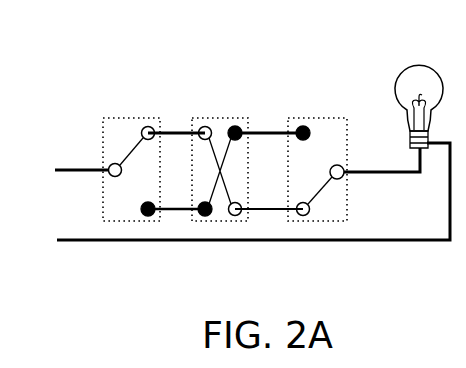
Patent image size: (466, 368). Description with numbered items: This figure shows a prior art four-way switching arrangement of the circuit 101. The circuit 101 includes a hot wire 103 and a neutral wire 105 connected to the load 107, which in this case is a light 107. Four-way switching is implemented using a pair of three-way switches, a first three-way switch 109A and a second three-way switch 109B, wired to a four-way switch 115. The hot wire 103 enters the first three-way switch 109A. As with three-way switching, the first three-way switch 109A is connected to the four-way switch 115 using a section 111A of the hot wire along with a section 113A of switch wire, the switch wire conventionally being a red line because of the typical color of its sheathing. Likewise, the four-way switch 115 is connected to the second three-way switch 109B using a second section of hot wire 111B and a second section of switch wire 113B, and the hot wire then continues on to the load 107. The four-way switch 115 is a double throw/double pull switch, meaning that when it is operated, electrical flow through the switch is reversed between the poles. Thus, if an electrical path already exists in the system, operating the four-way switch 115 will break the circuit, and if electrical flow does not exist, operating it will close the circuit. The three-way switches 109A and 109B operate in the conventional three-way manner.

The circuit 101 is at (333, 34).
The hot wire 103 is at (62, 168).
The neutral wire 105 is at (393, 242).
The load 107 is at (399, 101).
The first three-way switch 109A is at (101, 118).
The second three-way switch 109B is at (347, 118).
The section of hot wire 111A is at (178, 130).
The second section of hot wire 111B is at (273, 130).
The section of switch wire 113A is at (168, 212).
The second section of switch wire 113B is at (273, 212).
The four-way switch 115 is at (222, 222).